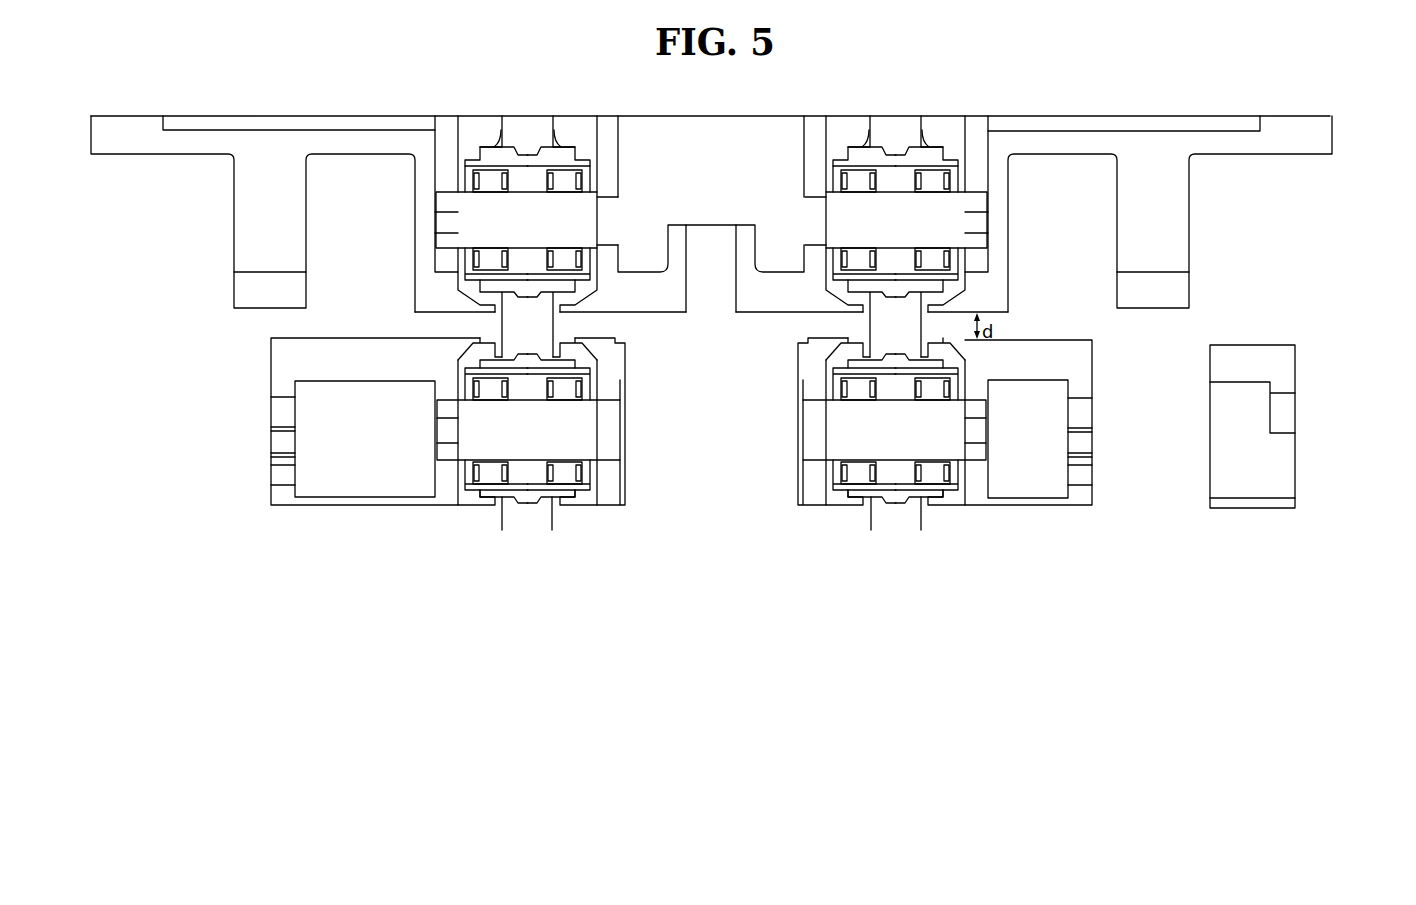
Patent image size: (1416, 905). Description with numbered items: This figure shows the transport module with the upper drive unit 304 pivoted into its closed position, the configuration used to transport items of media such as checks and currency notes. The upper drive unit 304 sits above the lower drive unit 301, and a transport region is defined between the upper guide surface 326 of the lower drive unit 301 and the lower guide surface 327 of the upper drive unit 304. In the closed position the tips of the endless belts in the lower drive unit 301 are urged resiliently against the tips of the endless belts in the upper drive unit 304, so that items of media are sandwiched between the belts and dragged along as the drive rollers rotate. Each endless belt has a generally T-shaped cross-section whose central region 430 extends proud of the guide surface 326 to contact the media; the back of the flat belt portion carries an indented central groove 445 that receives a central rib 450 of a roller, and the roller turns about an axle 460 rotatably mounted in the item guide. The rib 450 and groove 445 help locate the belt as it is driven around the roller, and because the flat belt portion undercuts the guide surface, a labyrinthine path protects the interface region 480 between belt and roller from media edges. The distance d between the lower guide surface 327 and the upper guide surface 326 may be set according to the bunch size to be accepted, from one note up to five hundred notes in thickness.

The lower drive unit 301 is at (1320, 449).
The upper drive unit 304 is at (1345, 200).
The upper guide surface 326 is at (293, 337).
The lower guide surface 327 is at (767, 328).
The central region 430 is at (533, 338).
The indented central groove 445 is at (897, 503).
The central rib 450 is at (523, 503).
The axle 460 is at (857, 418).
The interface region 480 is at (972, 362).